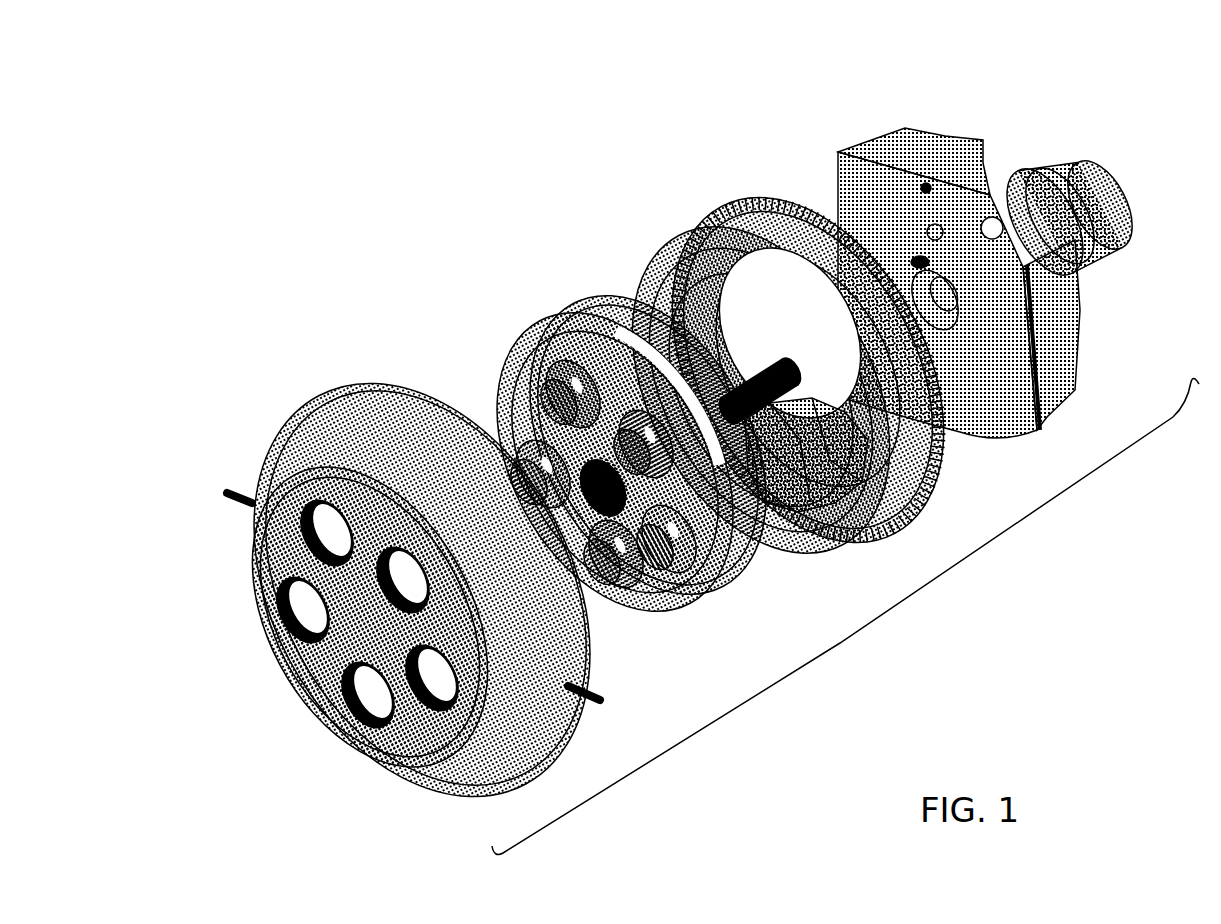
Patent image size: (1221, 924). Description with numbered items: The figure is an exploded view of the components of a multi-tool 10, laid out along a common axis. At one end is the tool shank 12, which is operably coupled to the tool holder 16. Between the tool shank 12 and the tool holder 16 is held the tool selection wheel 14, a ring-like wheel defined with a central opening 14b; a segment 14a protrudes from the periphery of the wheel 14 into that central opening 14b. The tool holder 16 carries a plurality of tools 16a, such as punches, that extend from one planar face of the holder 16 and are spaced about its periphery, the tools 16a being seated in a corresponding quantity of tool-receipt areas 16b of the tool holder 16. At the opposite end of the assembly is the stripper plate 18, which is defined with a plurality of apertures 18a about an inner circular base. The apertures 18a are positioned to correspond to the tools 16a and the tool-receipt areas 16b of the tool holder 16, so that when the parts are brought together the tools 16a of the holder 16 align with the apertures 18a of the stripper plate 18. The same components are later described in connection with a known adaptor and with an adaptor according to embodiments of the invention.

The multi-tool 10 is at (868, 640).
The tool shank 12 is at (1046, 170).
The tool selection wheel 14 is at (789, 331).
The segment 14a is at (812, 515).
The central opening 14b is at (778, 306).
The tool holder 16 is at (610, 442).
The tools 16a is at (540, 455).
The tool-receipt areas 16b is at (510, 440).
The stripper plate 18 is at (421, 574).
The apertures 18a is at (325, 537).